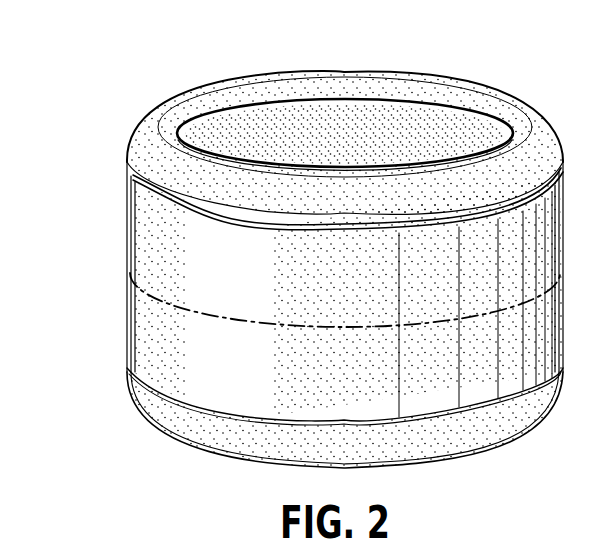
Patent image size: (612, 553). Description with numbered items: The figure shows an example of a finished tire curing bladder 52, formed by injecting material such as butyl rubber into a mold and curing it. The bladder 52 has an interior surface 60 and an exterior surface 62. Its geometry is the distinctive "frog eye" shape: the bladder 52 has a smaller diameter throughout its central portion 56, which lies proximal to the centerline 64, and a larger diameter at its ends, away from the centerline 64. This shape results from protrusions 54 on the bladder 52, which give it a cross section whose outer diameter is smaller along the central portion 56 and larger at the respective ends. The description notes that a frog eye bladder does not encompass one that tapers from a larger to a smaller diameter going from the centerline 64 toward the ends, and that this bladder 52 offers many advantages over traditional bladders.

The tire bladder 52 is at (497, 92).
The protrusions 54 is at (143, 118).
The central portion 56 is at (113, 180).
The interior surface 60 is at (328, 130).
The exterior surface 62 is at (238, 388).
The centerline 64 is at (200, 312).